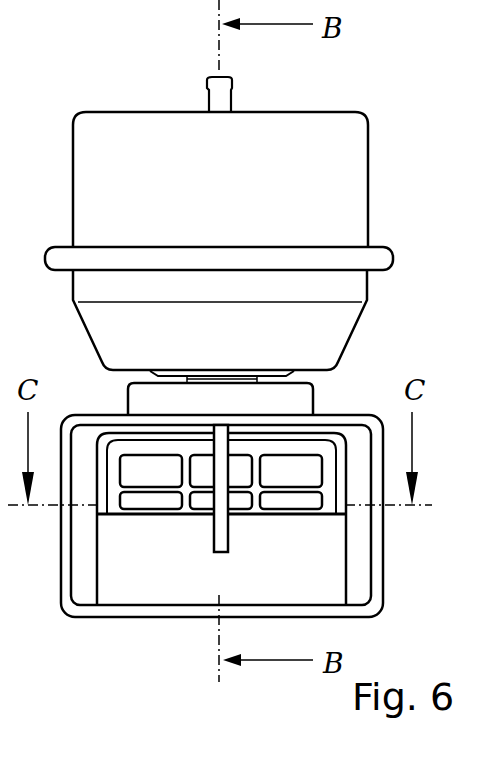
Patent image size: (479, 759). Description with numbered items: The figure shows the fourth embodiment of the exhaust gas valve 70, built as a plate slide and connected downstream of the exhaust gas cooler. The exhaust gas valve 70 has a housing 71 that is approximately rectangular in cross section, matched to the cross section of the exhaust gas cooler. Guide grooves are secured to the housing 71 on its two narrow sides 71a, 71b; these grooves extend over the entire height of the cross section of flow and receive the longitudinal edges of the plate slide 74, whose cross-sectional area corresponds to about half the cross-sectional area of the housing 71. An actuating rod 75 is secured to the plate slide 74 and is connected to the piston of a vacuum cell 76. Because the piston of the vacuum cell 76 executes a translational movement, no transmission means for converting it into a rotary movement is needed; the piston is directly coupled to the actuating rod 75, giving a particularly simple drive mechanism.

The exhaust gas valve 70 is at (238, 545).
The housing 71 is at (238, 516).
The narrow side of the housing 71a is at (383, 545).
The narrow side of the housing 71b is at (63, 538).
The plate slide 74 is at (174, 570).
The actuating rod 75 is at (222, 533).
The vacuum cell 76 is at (225, 198).